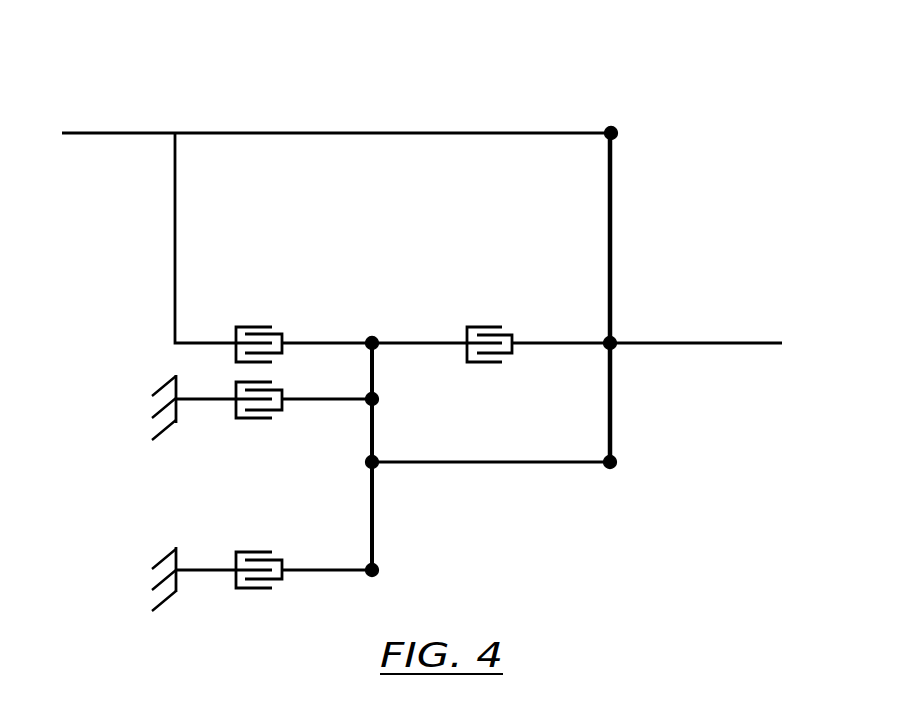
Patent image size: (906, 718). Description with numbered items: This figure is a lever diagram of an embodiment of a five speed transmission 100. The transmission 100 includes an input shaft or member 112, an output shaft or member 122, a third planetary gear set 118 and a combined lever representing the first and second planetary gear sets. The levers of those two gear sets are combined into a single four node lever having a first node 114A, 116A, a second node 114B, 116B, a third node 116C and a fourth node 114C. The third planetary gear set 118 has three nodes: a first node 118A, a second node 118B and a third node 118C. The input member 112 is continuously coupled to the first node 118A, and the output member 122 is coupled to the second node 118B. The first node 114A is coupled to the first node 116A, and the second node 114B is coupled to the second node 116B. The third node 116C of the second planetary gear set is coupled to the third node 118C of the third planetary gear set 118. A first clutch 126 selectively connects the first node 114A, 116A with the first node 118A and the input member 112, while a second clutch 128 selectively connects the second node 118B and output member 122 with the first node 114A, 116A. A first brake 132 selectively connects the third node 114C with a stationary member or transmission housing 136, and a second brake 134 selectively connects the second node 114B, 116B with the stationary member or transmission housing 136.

The five speed transmission 100 is at (686, 99).
The input shaft or member 112 is at (110, 136).
The output shaft or member 122 is at (733, 348).
The third planetary gear set 118 is at (603, 497).
The first node of the third planetary gear set 118A is at (617, 136).
The second node of the third planetary gear set 118B is at (615, 339).
The third node of the third planetary gear set 118C is at (617, 465).
The first clutch 126 is at (253, 325).
The second clutch 128 is at (484, 325).
The first node of the first planetary gear set 114A is at (357, 424).
The first node of the second planetary gear set 116A is at (370, 337).
The second node of the first planetary gear set 114B is at (457, 412).
The second node of the second planetary gear set 116B is at (378, 402).
The third node of the second planetary gear set 116C is at (375, 468).
The third node of the first planetary gear set 114C is at (378, 573).
The second brake 134 is at (255, 420).
The first brake 132 is at (245, 550).
The stationary member or transmission housing 136 is at (166, 428).